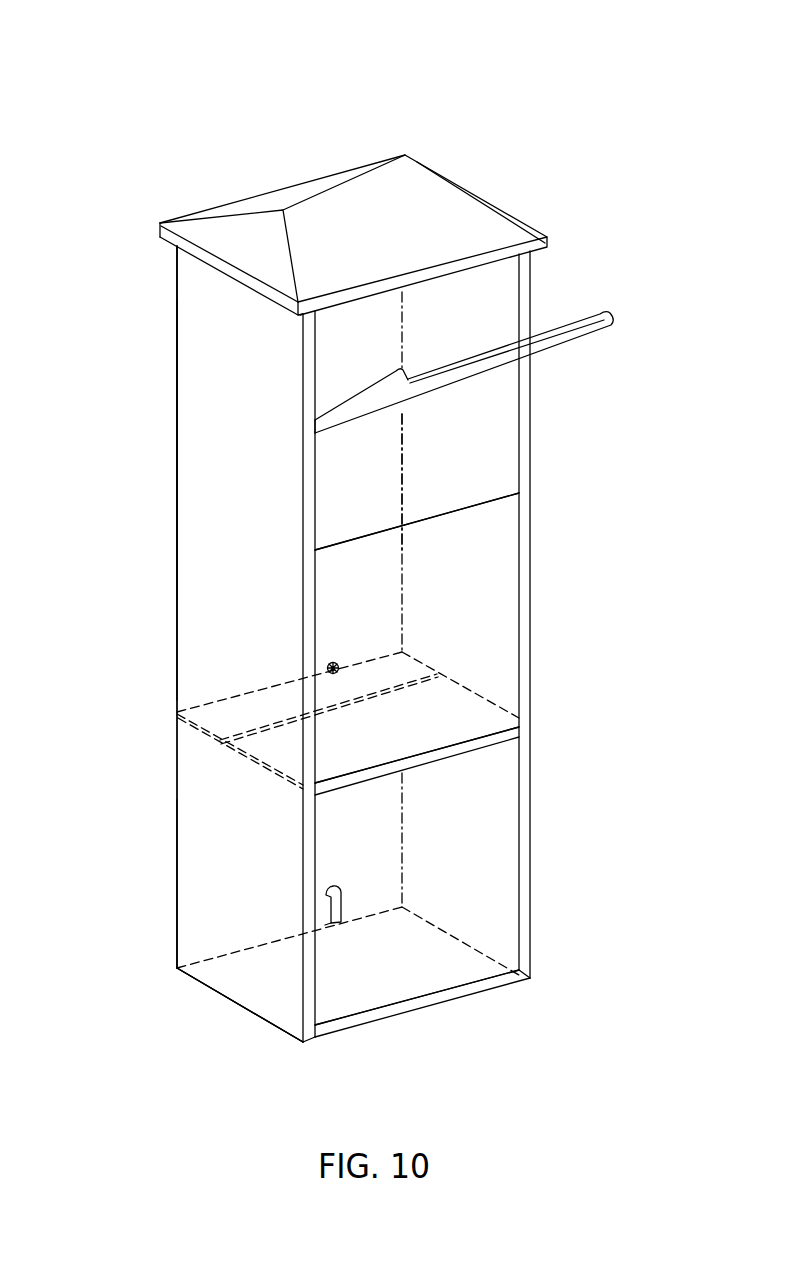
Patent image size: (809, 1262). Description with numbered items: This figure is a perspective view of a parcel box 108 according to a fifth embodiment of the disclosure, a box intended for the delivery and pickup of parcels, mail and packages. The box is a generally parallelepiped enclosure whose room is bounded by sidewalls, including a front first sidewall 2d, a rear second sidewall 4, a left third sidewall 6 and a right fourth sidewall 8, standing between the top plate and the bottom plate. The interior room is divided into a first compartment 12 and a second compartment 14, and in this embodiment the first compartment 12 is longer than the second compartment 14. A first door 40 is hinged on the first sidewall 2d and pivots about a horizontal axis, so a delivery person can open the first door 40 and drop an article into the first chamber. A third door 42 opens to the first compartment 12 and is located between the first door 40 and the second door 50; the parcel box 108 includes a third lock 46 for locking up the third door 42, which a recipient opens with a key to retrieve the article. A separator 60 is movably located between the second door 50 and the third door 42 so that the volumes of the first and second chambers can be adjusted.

The parcel box 108 is at (138, 126).
The fourth sidewall 8 is at (490, 285).
The second sidewall 4 is at (225, 343).
The third sidewall 6 is at (218, 395).
The first compartment 12 is at (177, 450).
The second compartment 14 is at (175, 858).
The first door 40 is at (523, 358).
The first sidewall 2d is at (490, 442).
The separator 60 is at (242, 707).
The third door 42 is at (467, 607).
The third lock 46 is at (340, 668).
The second door 50 is at (478, 863).